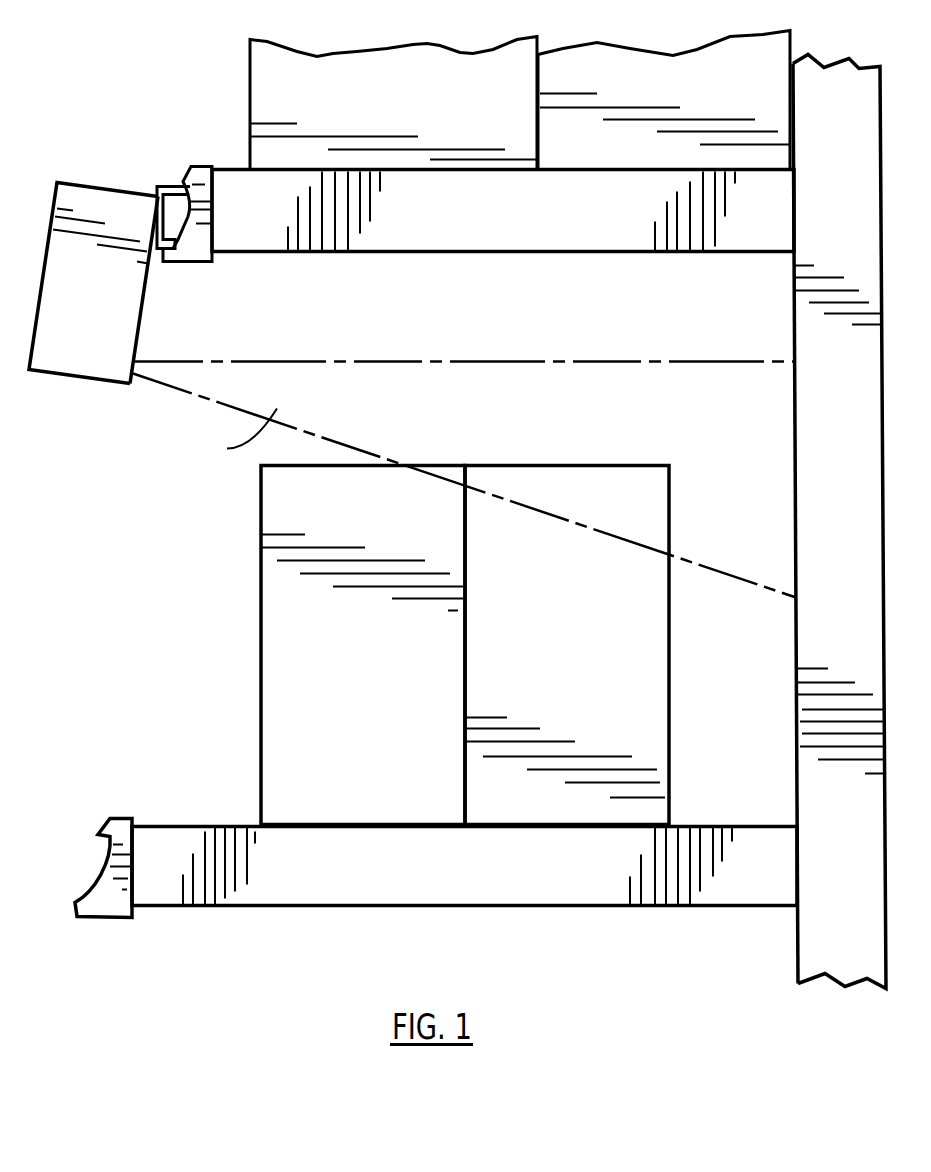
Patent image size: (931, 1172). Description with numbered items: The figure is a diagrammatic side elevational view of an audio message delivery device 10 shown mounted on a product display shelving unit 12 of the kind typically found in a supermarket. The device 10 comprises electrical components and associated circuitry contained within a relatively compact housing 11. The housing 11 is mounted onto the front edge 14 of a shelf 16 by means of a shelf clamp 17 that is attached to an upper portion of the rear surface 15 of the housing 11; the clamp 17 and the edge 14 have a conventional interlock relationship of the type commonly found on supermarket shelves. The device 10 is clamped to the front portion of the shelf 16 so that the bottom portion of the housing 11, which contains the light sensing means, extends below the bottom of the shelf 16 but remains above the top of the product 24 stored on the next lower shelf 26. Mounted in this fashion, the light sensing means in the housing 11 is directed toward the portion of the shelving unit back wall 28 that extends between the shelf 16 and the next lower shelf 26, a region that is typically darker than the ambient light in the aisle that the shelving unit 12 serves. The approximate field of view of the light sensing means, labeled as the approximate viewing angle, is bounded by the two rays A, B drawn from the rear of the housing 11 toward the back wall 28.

The audio message delivery device 10 is at (68, 162).
The housing 11 is at (84, 287).
The shelving unit 12 is at (852, 379).
The front edge 14 is at (202, 183).
The rear surface 15 is at (142, 316).
The shelf 16 is at (495, 223).
The shelf clamp 17 is at (172, 190).
The product 24 is at (382, 673).
The next lower shelf 26 is at (392, 878).
The shelving unit back wall 28 is at (795, 470).
The ray A is at (507, 360).
The ray B is at (762, 583).